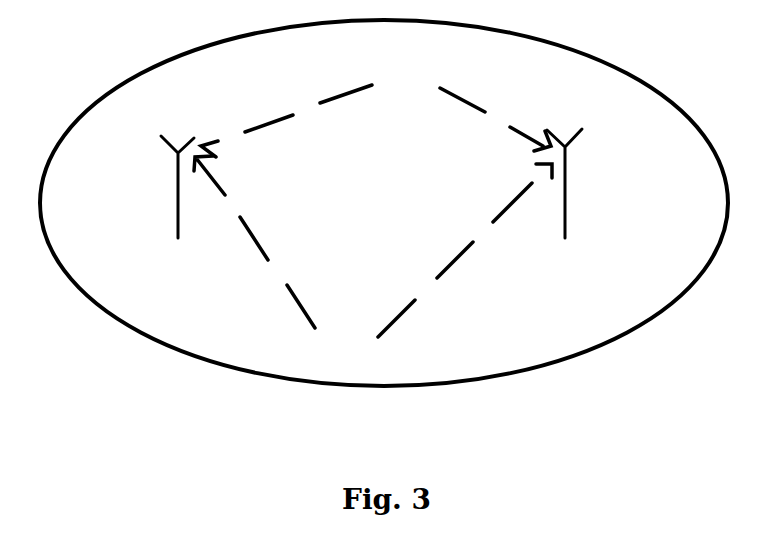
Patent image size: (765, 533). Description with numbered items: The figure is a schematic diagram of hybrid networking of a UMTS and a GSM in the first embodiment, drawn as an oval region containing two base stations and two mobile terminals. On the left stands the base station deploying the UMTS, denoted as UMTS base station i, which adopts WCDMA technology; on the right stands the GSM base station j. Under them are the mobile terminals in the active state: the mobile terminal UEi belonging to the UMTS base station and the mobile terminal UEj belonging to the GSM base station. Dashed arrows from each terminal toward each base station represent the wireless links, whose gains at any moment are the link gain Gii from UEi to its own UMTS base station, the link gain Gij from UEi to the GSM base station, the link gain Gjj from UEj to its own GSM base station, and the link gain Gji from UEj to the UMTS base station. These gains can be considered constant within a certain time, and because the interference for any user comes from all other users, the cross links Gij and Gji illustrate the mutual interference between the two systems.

The UMTS base station i is at (145, 189).
The GSM base station j is at (586, 185).
The mobile terminal belonging to the GSM base station UEj is at (405, 91).
The mobile terminal belonging to the UMTS base station UEi is at (353, 339).
The wireless link gain Gji is at (286, 118).
The wireless link gain Gjj is at (495, 111).
The wireless link gain Gii is at (254, 242).
The wireless link gain Gij is at (465, 250).